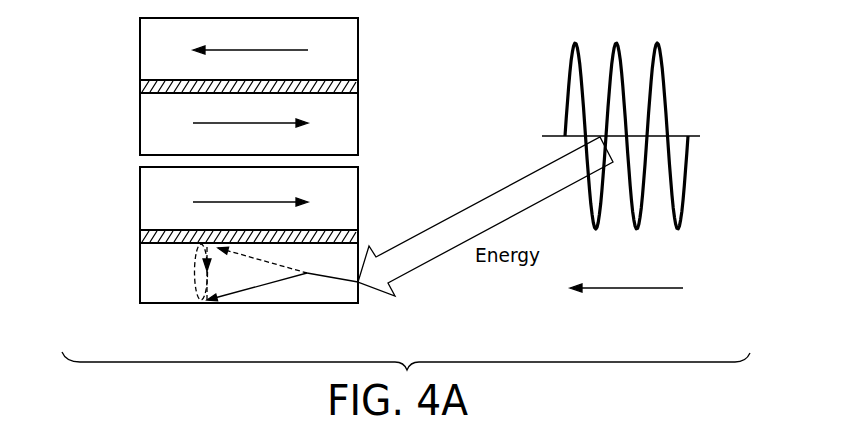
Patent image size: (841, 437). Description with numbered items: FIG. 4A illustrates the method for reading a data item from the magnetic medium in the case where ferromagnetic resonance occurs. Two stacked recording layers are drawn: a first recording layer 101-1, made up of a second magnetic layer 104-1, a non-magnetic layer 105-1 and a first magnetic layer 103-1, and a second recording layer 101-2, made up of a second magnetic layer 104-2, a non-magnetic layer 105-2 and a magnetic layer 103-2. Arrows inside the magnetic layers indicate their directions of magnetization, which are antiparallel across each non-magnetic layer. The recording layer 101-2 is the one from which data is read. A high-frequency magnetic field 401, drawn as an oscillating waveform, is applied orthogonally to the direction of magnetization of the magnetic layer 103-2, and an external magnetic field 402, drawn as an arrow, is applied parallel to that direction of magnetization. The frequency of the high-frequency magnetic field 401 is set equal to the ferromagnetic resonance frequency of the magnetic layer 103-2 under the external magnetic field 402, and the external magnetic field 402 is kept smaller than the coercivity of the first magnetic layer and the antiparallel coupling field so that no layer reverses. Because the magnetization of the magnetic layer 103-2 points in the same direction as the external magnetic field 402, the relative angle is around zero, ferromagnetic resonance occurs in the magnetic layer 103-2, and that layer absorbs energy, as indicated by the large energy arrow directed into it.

The recording layer 101-1 is at (122, 15).
The recording layer 101-2 is at (122, 167).
The second magnetic layer 104-1 is at (347, 47).
The non-magnetic layer 105-1 is at (358, 86).
The first magnetic layer 103-1 is at (347, 122).
The second magnetic layer 104-2 is at (347, 193).
The non-magnetic layer 105-2 is at (358, 233).
The magnetic layer 103-2 is at (347, 294).
The high-frequency magnetic field 401 is at (668, 95).
The external magnetic field 402 is at (632, 289).